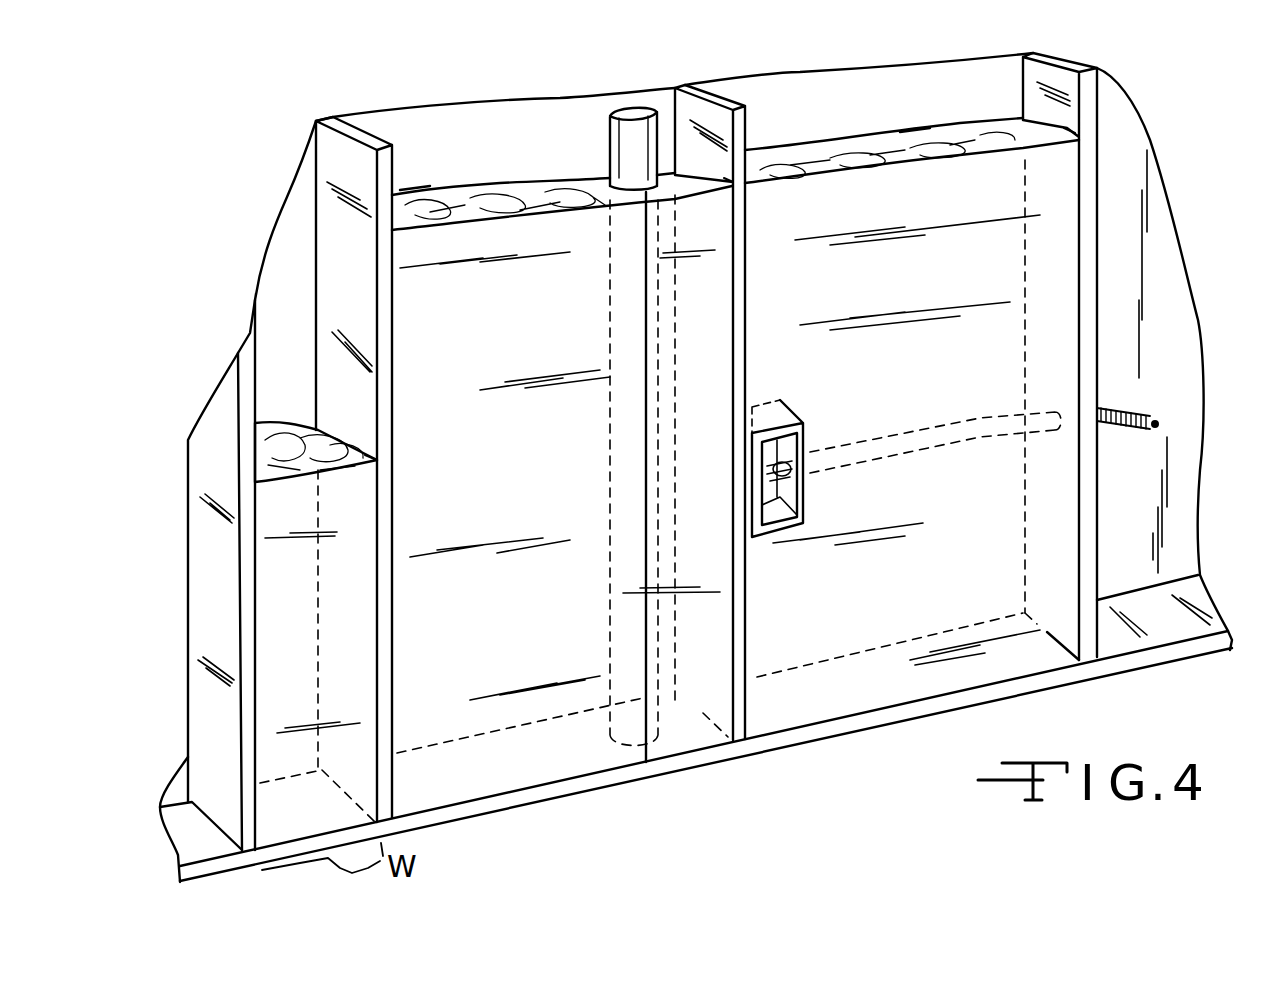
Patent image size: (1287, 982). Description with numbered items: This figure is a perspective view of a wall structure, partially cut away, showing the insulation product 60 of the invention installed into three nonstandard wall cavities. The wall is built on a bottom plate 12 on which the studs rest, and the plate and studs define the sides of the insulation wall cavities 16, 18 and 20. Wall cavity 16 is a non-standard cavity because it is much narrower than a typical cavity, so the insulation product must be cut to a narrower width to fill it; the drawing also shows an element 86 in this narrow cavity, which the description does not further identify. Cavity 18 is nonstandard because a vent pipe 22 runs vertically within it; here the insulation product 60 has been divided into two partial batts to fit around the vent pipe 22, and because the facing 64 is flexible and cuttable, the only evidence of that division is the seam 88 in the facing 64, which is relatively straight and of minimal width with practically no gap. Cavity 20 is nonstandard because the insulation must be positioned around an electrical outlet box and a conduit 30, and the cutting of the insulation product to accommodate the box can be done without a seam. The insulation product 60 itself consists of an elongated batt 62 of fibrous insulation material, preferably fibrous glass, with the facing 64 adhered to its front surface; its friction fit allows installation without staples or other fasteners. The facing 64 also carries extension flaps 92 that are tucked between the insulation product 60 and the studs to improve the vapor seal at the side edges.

The bottom plate 12 is at (1200, 593).
The insulation wall cavity 16 is at (288, 235).
The insulation wall cavity 18 is at (463, 128).
The insulation wall cavity 20 is at (777, 113).
The vent pipe 22 is at (627, 132).
The conduit 30 is at (1140, 408).
The insulation product 60 is at (443, 187).
The batt 62 is at (490, 180).
The facing 64 is at (537, 322).
The insulation block 86 is at (282, 420).
The seam 88 is at (648, 437).
The extension flaps 92 is at (730, 175).